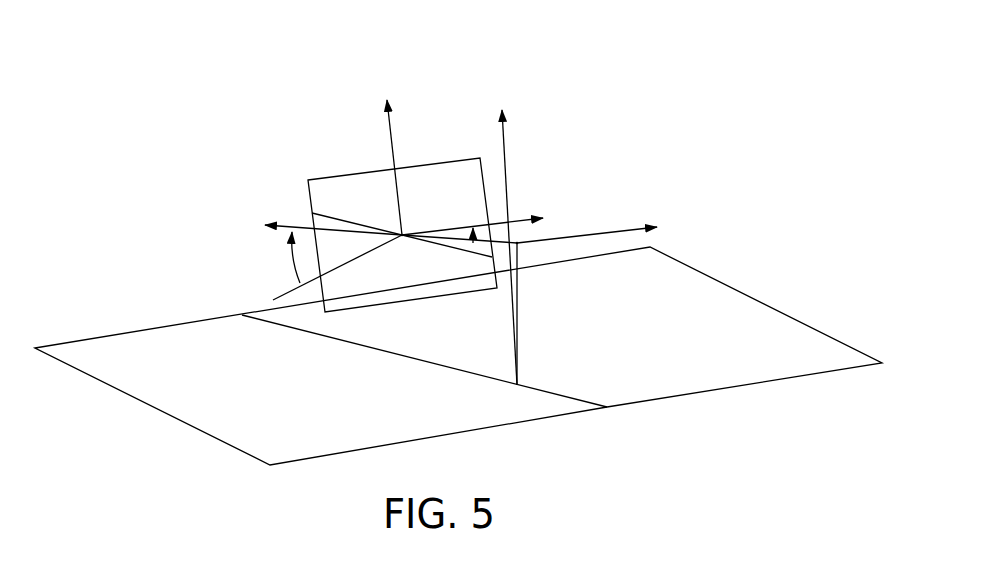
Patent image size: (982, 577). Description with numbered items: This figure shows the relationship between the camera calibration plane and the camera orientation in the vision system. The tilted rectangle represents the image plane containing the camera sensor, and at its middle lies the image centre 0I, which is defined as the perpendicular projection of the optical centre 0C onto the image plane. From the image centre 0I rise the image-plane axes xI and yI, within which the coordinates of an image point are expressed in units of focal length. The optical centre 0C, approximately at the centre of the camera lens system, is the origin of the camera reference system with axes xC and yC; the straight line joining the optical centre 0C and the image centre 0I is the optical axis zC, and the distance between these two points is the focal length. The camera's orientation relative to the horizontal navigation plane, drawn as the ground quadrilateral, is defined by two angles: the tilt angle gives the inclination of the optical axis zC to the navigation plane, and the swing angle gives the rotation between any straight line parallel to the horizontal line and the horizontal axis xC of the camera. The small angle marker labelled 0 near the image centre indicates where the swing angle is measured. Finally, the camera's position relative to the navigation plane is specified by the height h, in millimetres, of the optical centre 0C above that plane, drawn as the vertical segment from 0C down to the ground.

The image plane y coordinate axis yI is at (403, 158).
The image plane x coordinate axis xI is at (486, 220).
The optical axis zC is at (370, 229).
The horizontal axis of the camera xC is at (604, 226).
The camera y coordinate axis yC is at (522, 235).
The height of the optical centre h is at (527, 314).
The image centre 0I is at (415, 218).
The optical centre 0C is at (534, 254).
The origin 0 is at (448, 258).